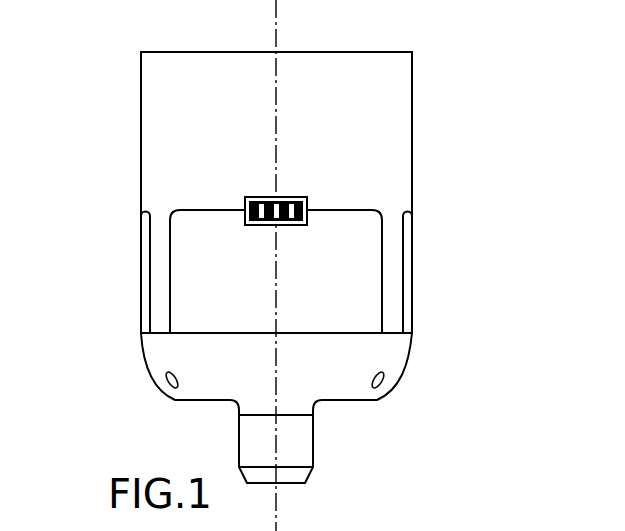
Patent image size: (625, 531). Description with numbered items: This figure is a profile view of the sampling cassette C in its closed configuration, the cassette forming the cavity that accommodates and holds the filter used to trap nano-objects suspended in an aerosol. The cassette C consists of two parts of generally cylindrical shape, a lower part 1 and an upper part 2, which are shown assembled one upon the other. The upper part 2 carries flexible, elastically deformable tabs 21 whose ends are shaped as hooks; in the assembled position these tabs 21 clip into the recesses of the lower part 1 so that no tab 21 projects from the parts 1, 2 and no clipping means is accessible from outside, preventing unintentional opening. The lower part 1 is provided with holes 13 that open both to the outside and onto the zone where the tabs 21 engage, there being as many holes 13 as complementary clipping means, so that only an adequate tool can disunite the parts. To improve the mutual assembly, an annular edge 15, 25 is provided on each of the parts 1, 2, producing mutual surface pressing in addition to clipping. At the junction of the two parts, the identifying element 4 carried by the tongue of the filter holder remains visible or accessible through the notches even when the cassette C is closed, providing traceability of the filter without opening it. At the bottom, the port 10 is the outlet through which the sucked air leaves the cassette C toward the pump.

The lower part 1 is at (354, 263).
The upper part 2 is at (367, 63).
The identifying element 4 is at (291, 198).
The port 10 is at (282, 484).
The holes 13 is at (168, 378).
The annular edge 15 is at (211, 167).
The annular edge 25 is at (205, 210).
The flexible tabs 21 is at (158, 270).
The cassette C is at (440, 197).